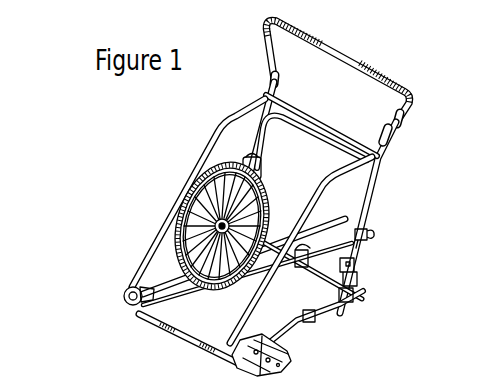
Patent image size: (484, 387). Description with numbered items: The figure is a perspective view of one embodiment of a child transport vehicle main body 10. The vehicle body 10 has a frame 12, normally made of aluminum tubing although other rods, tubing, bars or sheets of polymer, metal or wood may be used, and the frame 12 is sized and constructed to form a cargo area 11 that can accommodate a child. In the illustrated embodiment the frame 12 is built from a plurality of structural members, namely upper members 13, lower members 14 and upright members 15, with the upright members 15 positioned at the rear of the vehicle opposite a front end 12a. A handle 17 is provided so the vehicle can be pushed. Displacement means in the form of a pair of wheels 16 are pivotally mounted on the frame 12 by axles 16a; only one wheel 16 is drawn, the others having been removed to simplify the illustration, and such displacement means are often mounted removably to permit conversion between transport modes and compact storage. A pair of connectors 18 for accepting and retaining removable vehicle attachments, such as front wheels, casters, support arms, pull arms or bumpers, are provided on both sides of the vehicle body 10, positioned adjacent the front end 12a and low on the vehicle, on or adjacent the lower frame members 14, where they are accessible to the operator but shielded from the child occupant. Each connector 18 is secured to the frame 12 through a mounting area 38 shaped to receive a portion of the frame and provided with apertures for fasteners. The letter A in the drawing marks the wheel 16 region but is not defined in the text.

The vehicle main body 10 is at (170, 172).
The cargo area 11 is at (371, 176).
The frame 12 is at (366, 247).
The front end 12a is at (157, 335).
The upper members 13 is at (219, 131).
The lower members 14 is at (176, 277).
The upright members 15 is at (252, 128).
The wheel 16 is at (202, 187).
The axle 16a is at (358, 294).
The handle 17 is at (370, 61).
The connector 18 is at (124, 293).
The mounting area 38 is at (170, 296).
The front wheel A is at (222, 226).